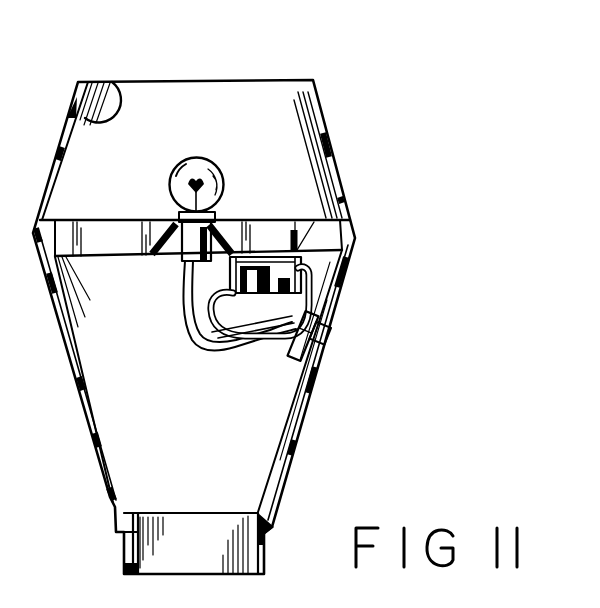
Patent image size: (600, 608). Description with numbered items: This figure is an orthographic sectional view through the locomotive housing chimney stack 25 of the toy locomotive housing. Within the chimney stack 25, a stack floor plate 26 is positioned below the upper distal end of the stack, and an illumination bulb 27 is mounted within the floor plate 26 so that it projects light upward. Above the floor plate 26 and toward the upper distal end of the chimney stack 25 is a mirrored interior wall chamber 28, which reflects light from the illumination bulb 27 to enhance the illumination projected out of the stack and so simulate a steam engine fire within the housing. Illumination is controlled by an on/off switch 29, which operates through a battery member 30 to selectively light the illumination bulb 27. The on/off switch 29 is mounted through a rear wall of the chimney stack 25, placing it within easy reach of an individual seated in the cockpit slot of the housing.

The locomotive housing chimney stack 25 is at (323, 112).
The stack floor plate 26 is at (171, 220).
The illumination bulb 27 is at (211, 160).
The mirrored interior wall chamber 28 is at (112, 82).
The on/off switch 29 is at (333, 332).
The battery member 30 is at (242, 285).